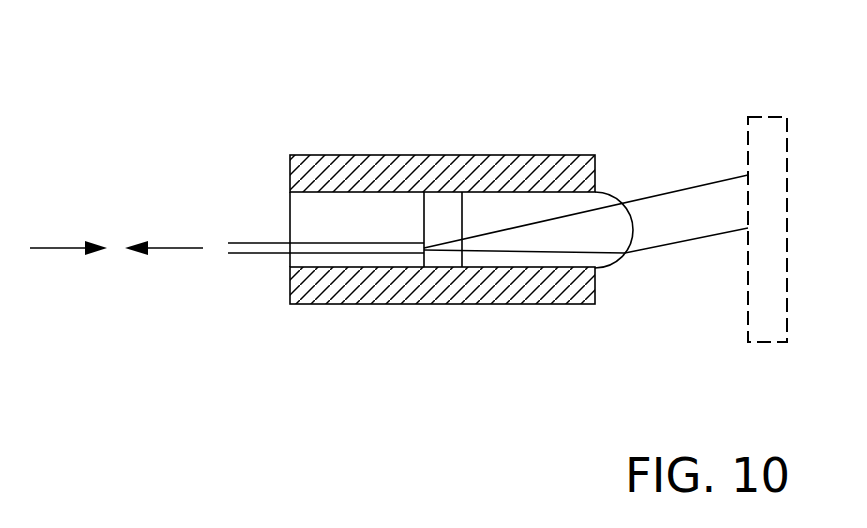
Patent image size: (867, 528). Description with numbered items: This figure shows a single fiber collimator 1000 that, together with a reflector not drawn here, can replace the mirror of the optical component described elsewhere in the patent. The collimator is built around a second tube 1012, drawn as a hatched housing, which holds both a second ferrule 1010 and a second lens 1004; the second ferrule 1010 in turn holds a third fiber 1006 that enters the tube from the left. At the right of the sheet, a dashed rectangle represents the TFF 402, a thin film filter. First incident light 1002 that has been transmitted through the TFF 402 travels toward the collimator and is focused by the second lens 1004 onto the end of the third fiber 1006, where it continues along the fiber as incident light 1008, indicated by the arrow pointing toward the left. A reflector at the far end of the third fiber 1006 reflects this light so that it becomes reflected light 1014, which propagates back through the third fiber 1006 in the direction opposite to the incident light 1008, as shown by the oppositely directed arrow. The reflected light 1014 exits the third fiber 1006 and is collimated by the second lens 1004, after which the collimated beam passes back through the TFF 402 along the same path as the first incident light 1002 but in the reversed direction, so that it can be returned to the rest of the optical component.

The single fiber collimator 1000 is at (235, 78).
The second tube 1012 is at (408, 154).
The second ferrule 1010 is at (288, 210).
The third fiber 1006 is at (272, 257).
The second lens 1004 is at (615, 191).
The first incident light 1002 is at (655, 252).
The TFF 402 is at (768, 117).
The reflected light 1014 is at (52, 248).
The incident light 1008 is at (170, 248).